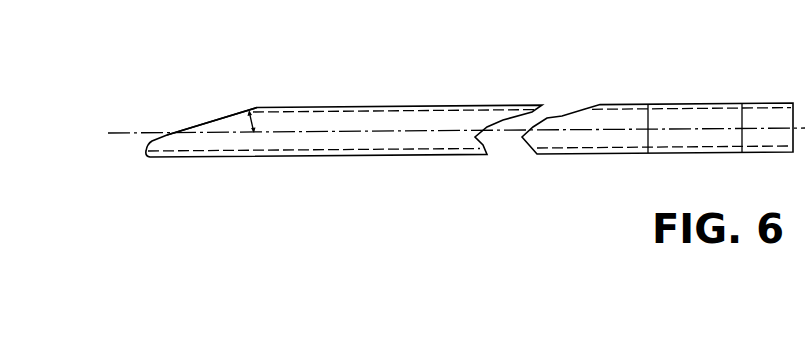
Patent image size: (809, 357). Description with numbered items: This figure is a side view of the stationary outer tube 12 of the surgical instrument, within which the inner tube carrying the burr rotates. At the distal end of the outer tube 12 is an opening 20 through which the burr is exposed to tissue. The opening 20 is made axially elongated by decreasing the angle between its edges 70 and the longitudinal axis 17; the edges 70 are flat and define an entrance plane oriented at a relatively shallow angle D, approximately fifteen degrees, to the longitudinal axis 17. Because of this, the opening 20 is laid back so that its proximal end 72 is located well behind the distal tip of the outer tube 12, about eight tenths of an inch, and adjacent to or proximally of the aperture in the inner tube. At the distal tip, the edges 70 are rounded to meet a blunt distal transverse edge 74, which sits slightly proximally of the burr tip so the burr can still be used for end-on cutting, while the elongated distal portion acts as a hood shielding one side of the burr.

The outer tube 12 is at (435, 105).
The opening 20 is at (185, 98).
The edges 70 is at (225, 114).
The proximal end 72 is at (262, 106).
The distal transverse edge 74 is at (150, 141).
The longitudinal axis 17 is at (512, 133).
The angle D is at (256, 121).